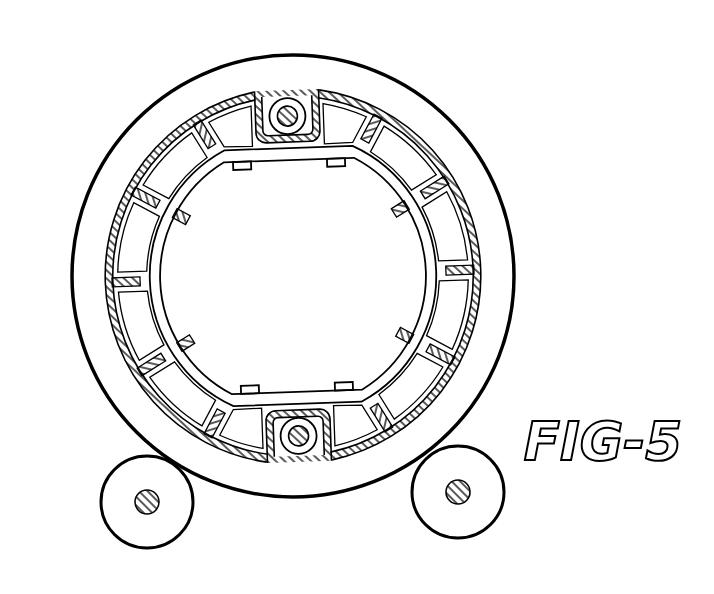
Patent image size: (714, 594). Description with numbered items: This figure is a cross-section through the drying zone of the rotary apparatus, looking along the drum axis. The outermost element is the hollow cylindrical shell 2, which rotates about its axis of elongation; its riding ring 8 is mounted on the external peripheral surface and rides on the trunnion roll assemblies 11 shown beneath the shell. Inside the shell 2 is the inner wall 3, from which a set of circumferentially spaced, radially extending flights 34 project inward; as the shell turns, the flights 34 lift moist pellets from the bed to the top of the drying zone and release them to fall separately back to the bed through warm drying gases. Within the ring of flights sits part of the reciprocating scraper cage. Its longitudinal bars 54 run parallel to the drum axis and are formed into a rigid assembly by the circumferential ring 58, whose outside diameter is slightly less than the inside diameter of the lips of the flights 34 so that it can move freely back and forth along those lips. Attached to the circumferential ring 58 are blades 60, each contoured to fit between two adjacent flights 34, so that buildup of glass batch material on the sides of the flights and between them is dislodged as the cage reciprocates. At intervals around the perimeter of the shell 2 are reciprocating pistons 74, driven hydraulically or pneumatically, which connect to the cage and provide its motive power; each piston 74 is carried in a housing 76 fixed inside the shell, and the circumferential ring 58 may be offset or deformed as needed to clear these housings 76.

The hollow cylindrical shell 2 is at (478, 213).
The inner wall 3 is at (482, 242).
The riding ring 8 is at (420, 91).
The trunnion roll assembly 11 is at (428, 529).
The radially extending flight 34 is at (104, 264).
The longitudinal bar 54 is at (188, 344).
The circumferential ring 58 is at (196, 174).
The blade 60 is at (158, 173).
The reciprocating piston 74 is at (287, 99).
The housing 76 is at (314, 92).